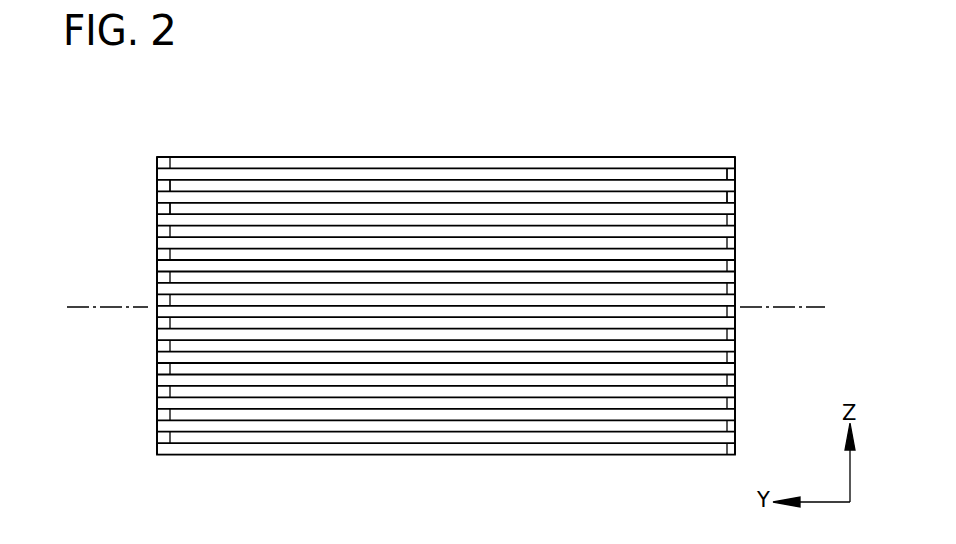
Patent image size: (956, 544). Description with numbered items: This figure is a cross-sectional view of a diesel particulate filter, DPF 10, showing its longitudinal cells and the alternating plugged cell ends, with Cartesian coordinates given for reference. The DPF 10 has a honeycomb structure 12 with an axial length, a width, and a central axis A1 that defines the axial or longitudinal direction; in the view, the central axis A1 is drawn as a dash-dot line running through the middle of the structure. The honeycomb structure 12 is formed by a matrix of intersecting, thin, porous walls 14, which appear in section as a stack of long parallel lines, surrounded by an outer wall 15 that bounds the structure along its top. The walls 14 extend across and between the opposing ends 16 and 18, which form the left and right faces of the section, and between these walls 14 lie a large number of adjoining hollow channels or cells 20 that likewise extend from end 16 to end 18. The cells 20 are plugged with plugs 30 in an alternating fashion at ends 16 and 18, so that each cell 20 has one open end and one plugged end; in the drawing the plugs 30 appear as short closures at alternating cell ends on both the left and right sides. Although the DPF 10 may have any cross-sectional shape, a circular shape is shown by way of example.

The DPF 10 is at (745, 91).
The honeycomb structure 12 is at (256, 132).
The porous walls 14 is at (375, 181).
The outer wall 15 is at (582, 157).
The end 16 is at (158, 405).
The end 18 is at (738, 393).
The cells 20 is at (510, 188).
The plugs 30 is at (165, 210).
The central axis A1 is at (785, 308).